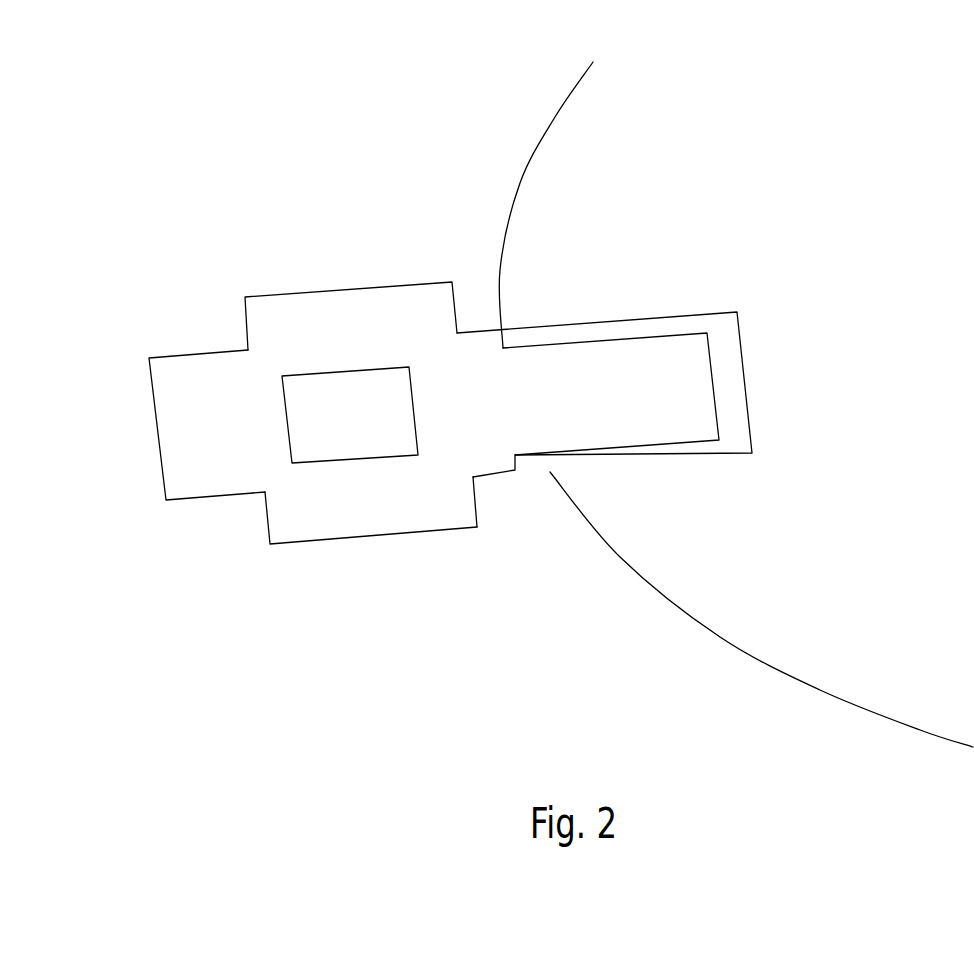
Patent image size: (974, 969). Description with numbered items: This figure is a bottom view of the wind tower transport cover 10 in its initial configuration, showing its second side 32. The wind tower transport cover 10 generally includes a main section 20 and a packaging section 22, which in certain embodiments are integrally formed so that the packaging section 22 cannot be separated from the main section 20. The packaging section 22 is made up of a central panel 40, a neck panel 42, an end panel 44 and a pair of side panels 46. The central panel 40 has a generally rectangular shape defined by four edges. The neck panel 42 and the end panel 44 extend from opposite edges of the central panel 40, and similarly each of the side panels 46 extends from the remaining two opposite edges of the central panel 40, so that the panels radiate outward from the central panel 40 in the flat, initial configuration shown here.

The wind tower transport cover 10 is at (380, 157).
The main section 20 is at (937, 697).
The packaging section 22 is at (442, 452).
The second side 32 is at (572, 130).
The central panel 40 is at (267, 365).
The neck panel 42 is at (479, 345).
The end panel 44 is at (175, 448).
The side panels 46 is at (320, 310).